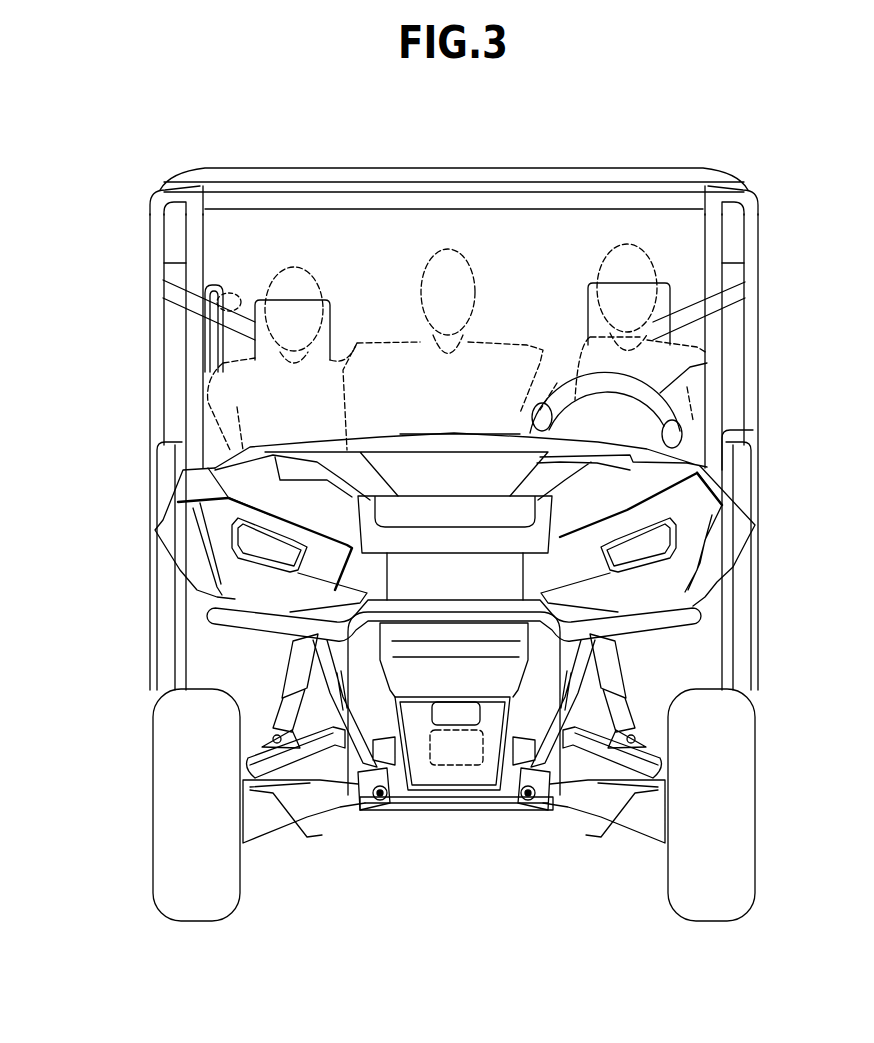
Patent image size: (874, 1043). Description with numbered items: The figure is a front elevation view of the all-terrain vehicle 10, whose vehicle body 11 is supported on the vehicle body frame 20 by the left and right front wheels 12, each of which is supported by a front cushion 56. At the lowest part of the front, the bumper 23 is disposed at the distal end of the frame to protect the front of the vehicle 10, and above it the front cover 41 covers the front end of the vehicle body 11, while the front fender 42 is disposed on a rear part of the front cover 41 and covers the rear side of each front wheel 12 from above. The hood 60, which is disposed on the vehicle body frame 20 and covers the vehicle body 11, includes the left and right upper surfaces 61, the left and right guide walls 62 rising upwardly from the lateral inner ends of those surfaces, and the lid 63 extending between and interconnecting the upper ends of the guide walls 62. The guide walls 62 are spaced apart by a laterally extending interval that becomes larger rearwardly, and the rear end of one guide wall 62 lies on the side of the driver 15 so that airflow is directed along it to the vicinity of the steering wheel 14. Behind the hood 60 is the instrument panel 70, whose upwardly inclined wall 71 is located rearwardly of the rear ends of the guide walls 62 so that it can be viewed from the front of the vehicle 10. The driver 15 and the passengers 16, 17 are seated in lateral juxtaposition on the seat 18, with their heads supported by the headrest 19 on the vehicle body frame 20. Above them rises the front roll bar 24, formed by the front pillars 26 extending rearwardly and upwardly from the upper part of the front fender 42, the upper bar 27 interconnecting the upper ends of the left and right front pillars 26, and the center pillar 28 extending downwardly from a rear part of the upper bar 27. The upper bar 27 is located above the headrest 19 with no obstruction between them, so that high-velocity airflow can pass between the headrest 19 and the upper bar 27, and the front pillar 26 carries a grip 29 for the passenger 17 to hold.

The vehicle 10 is at (88, 62).
The vehicle body 11 is at (457, 770).
The front wheels 12 is at (192, 903).
The steering wheel 14 is at (668, 395).
The driver 15 is at (627, 243).
The passenger 16 is at (445, 250).
The passenger 17 is at (303, 265).
The seat 18 is at (735, 440).
The headrest 19 is at (256, 262).
The vehicle body frame 20 is at (530, 834).
The bumper 23 is at (670, 638).
The front roll bar 24 is at (178, 273).
The front pillar 26 is at (185, 257).
The upper bar 27 is at (173, 186).
The center pillar 28 is at (150, 325).
The grip 29 is at (203, 352).
The front cover 41 is at (720, 560).
The front fender 42 is at (182, 536).
The front cushion 56 is at (281, 697).
The hood 60 is at (437, 565).
The upper surfaces 61 is at (253, 487).
The guide walls 62 is at (330, 493).
The lid 63 is at (470, 460).
The instrument panel 70 is at (406, 421).
The inclined wall 71 is at (430, 450).